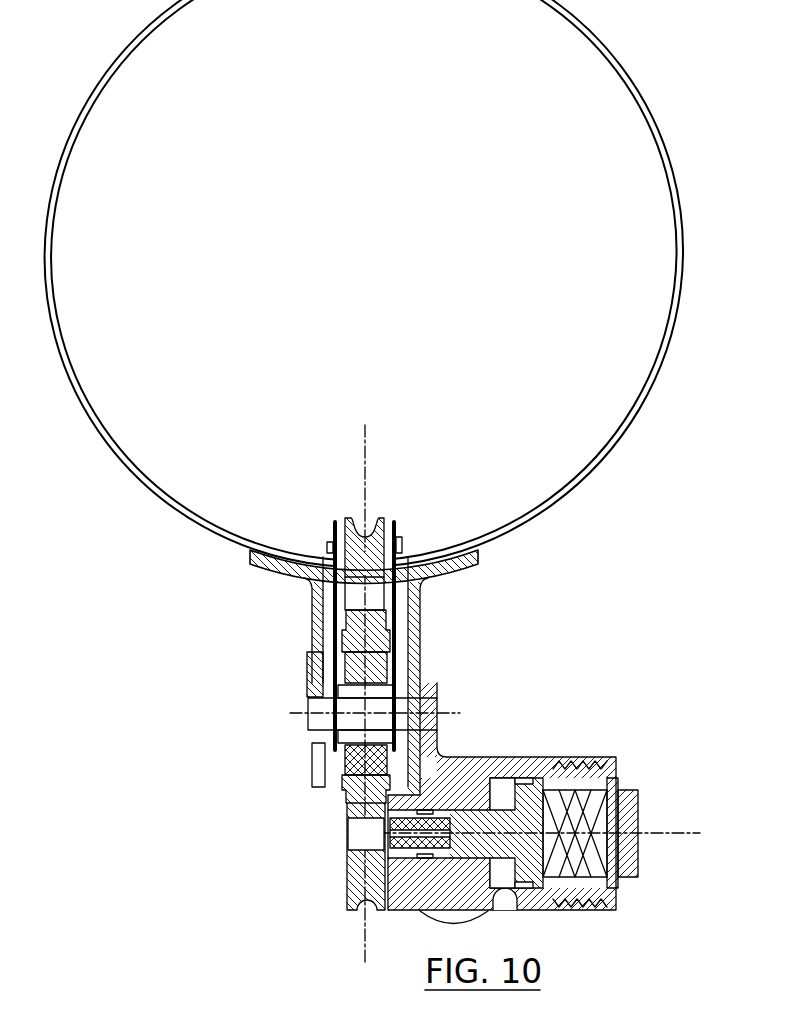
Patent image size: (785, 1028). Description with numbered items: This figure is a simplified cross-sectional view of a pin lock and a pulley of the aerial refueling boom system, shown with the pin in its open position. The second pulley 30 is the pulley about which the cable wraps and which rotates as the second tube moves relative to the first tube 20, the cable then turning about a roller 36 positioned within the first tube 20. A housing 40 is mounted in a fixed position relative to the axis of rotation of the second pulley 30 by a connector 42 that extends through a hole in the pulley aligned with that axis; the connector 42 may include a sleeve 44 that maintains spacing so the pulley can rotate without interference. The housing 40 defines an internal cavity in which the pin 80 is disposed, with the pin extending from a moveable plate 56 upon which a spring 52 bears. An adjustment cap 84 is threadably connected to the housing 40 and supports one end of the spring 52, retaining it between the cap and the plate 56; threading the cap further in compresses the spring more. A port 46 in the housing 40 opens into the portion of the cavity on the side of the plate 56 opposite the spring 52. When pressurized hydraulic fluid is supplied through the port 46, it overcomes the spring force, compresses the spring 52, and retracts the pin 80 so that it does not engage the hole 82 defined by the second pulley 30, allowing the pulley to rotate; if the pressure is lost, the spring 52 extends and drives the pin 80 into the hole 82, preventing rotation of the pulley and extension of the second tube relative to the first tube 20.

The first tube 20 is at (586, 35).
The second pulley 30 is at (353, 873).
The roller 36 is at (388, 536).
The housing 40 is at (403, 903).
The connector 42 is at (425, 702).
The sleeve 44 is at (357, 690).
The port 46 is at (503, 904).
The spring 52 is at (562, 796).
The plate 56 is at (527, 789).
The pin 80 is at (437, 827).
The hole 82 is at (355, 833).
The adjustment cap 84 is at (630, 805).